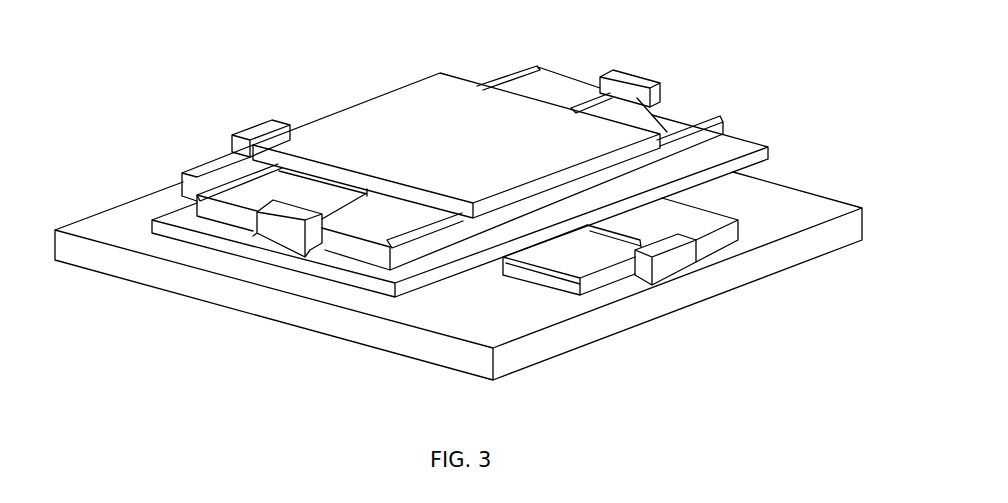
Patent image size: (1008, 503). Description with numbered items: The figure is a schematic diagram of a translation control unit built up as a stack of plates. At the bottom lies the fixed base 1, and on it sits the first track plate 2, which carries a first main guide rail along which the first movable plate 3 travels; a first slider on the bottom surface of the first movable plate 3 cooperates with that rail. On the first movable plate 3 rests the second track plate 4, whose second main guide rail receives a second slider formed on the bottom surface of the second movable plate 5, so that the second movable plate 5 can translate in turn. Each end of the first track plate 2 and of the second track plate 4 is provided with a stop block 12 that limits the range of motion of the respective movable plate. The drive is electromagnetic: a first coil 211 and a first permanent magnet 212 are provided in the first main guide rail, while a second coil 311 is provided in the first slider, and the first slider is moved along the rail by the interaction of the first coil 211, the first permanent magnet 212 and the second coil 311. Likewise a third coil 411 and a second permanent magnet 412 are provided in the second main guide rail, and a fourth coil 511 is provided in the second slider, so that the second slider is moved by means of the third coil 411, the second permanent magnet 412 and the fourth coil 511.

The fixed base 1 is at (203, 287).
The first track plate 2 is at (728, 233).
The first movable plate 3 is at (742, 146).
The second track plate 4 is at (183, 168).
The second movable plate 5 is at (428, 150).
The stop block 12 is at (693, 123).
The first coil 211 is at (628, 240).
The first permanent magnet 212 is at (622, 292).
The second coil 311 is at (590, 244).
The third coil 411 is at (220, 146).
The second permanent magnet 412 is at (355, 182).
The fourth coil 511 is at (350, 162).